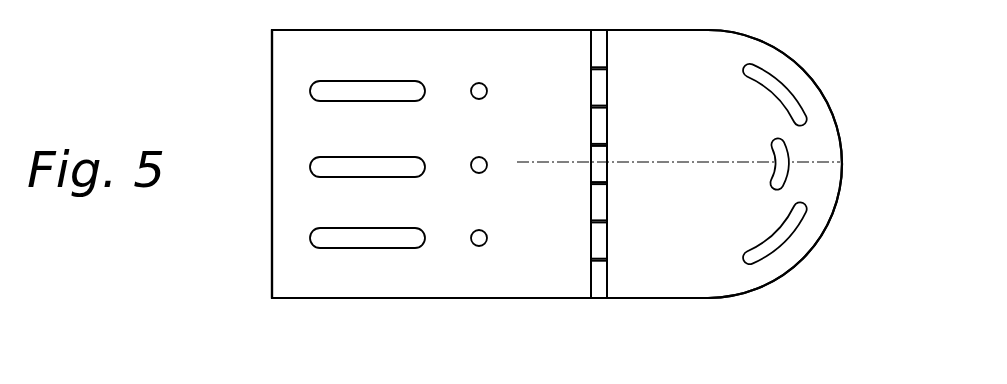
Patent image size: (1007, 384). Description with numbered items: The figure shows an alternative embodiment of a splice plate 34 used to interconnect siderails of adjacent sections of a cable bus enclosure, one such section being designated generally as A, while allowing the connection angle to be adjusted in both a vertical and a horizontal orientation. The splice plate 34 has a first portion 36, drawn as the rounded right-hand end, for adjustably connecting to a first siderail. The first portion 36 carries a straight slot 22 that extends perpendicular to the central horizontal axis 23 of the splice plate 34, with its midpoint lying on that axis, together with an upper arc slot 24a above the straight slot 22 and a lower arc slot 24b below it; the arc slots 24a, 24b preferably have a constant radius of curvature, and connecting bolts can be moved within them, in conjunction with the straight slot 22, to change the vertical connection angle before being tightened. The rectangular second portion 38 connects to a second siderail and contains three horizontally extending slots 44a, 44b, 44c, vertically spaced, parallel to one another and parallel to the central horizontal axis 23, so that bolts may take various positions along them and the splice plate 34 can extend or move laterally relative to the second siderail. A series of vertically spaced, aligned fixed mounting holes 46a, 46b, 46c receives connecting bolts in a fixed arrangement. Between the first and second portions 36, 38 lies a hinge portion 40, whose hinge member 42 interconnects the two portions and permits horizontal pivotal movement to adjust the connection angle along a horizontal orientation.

The straight slot 22 is at (777, 152).
The central horizontal axis 23 is at (635, 158).
The upper arc slot 24a is at (773, 83).
The lower arc slot 24b is at (785, 228).
The splice plate 34 is at (470, 275).
The first portion 36 is at (720, 278).
The second portion 38 is at (376, 277).
The hinge portion 40 is at (598, 306).
The hinge member 42 is at (599, 238).
The horizontally extending slot 44a is at (347, 90).
The horizontally extending slot 44b is at (347, 168).
The horizontally extending slot 44c is at (350, 235).
The fixed mounting hole 46a is at (485, 86).
The fixed mounting hole 46b is at (484, 158).
The fixed mounting hole 46c is at (487, 233).
The cable bus enclosure section A is at (818, 383).